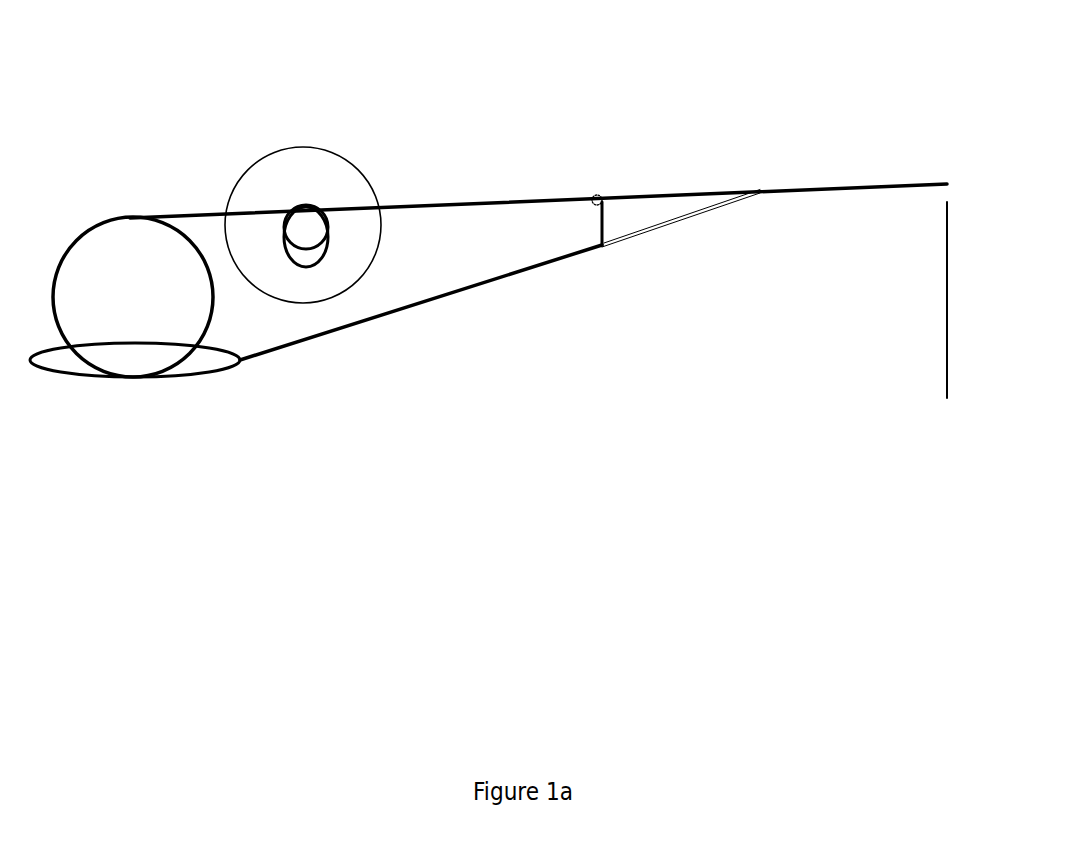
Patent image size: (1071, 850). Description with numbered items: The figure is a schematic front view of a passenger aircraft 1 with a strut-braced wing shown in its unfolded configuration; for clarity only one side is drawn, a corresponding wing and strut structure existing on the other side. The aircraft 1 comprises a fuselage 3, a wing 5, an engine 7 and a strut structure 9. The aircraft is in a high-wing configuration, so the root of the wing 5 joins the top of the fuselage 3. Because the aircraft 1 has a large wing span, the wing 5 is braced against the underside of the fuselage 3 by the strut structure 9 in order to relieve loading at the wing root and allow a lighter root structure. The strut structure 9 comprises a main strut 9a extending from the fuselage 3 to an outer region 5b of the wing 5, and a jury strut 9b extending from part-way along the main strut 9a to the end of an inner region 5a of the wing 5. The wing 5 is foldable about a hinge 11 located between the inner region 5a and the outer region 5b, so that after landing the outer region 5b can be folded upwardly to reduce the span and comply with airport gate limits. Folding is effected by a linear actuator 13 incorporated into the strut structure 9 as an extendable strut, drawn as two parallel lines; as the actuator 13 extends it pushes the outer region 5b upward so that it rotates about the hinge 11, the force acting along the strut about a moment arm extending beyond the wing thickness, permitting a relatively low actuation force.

The passenger aircraft 1 is at (100, 150).
The fuselage 3 is at (125, 309).
The wing 5 is at (393, 190).
The inner region of the wing 5a is at (430, 212).
The outer region of the wing 5b is at (870, 184).
The engine 7 is at (248, 198).
The strut structure 9 is at (418, 306).
The main strut 9a is at (480, 278).
The jury strut 9b is at (597, 227).
The hinge 11 is at (595, 193).
The linear actuator 13 is at (657, 231).